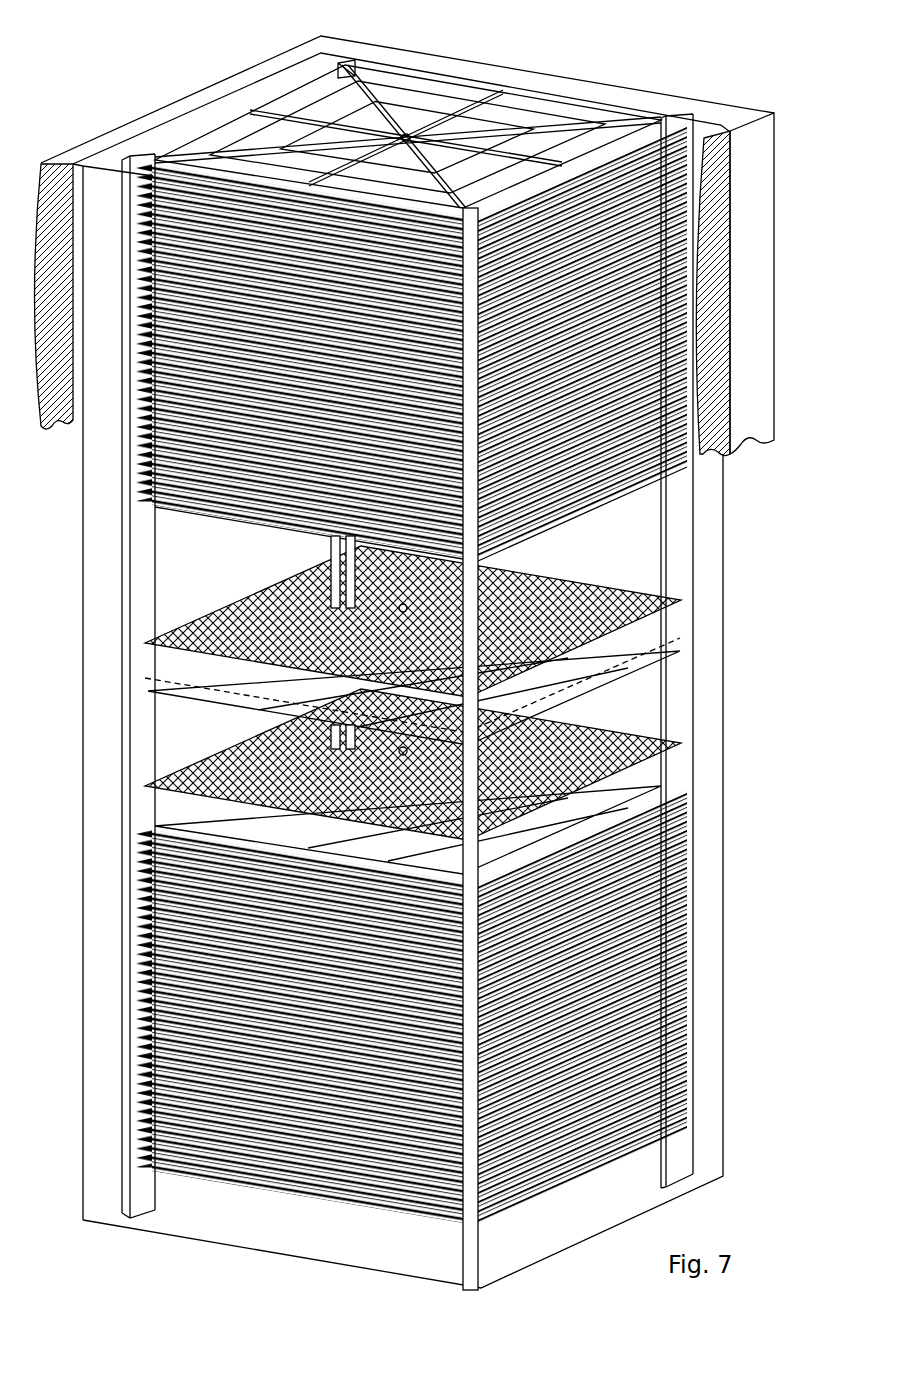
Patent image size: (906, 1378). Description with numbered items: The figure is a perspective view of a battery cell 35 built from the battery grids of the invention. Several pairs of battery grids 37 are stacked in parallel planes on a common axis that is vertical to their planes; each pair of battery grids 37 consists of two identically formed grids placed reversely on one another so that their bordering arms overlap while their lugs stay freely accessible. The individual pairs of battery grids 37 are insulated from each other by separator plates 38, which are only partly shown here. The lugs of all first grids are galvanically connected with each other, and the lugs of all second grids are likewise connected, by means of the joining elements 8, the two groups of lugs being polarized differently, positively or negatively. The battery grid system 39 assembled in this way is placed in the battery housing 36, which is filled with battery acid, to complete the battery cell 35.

The battery cell 35 is at (120, 62).
The battery housing 36 is at (726, 98).
The pair of battery grids 37 is at (147, 1030).
The separator plate 38 is at (633, 733).
The battery grid system 39 is at (458, 104).
The joining element 8 is at (656, 568).